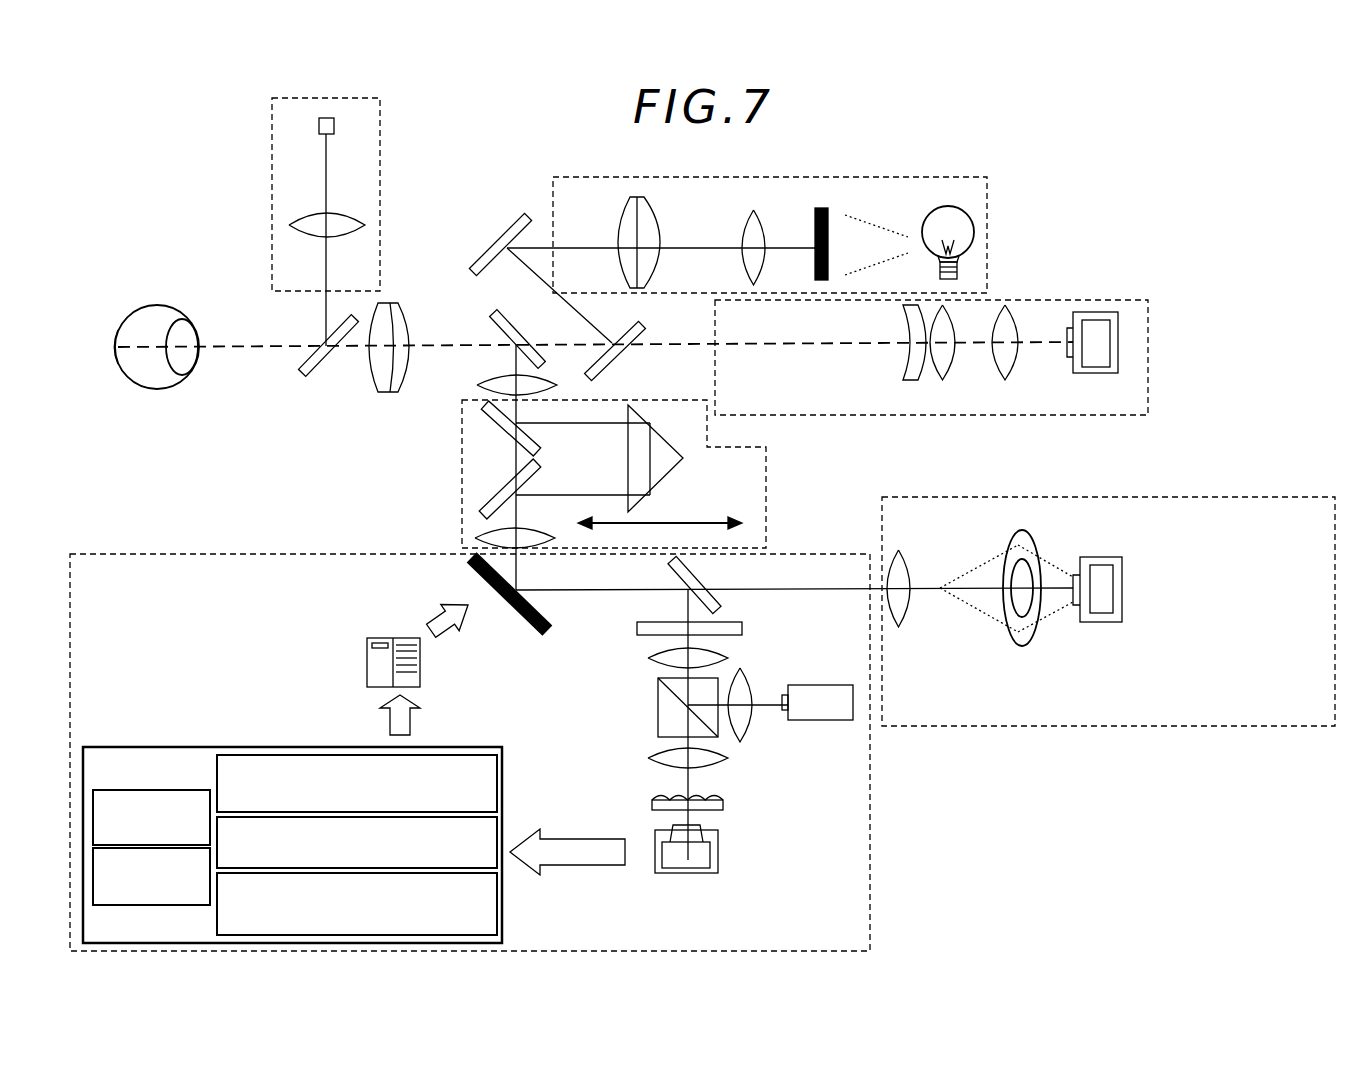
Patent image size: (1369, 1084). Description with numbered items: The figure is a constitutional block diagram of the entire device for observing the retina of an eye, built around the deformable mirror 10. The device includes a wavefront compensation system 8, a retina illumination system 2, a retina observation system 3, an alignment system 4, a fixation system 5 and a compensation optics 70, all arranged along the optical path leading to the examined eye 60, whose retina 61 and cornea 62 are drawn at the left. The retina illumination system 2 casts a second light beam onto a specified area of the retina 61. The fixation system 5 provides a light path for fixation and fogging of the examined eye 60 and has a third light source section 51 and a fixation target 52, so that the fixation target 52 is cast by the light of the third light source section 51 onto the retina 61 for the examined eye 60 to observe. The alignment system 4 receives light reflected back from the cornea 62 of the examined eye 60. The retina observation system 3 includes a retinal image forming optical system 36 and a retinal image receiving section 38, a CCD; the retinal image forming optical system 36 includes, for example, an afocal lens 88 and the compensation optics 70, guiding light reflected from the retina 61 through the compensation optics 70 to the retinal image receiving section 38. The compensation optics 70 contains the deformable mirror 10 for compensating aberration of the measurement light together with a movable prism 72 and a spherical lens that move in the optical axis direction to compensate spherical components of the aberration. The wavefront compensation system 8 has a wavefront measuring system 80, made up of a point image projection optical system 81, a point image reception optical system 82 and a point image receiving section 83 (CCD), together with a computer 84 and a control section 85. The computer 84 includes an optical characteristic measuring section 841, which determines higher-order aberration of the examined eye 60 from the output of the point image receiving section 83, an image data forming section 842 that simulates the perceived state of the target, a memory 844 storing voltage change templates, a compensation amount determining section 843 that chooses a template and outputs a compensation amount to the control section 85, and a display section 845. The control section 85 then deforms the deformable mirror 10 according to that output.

The retina illumination system 2 is at (382, 168).
The fixation system 5 is at (842, 239).
The fixation target 52 is at (833, 210).
The third light source section 51 is at (960, 210).
The examined eye 60 is at (164, 344).
The retina 61 is at (120, 367).
The cornea 62 is at (198, 368).
The afocal lens 88 is at (378, 394).
The alignment system 4 is at (747, 418).
The retina observation system 3 is at (1108, 593).
The retinal image forming optical system 36 is at (948, 542).
The retinal image receiving section 38 is at (1115, 557).
The compensation optics 70 is at (440, 474).
The movable prism 72 is at (680, 468).
The deformable mirror 10 is at (537, 633).
The wavefront compensation system 8 is at (693, 752).
The wavefront measuring system 80 is at (714, 734).
The point image projection optical system 81 is at (770, 657).
The point image reception optical system 82 is at (632, 717).
The point image receiving section 83 is at (720, 865).
The control section 85 is at (377, 638).
The computer 84 is at (330, 819).
The optical characteristic measuring section 841 is at (503, 778).
The image data forming section 842 is at (503, 815).
The compensation amount determining section 843 is at (503, 893).
The memory 844 is at (102, 790).
The display section 845 is at (175, 903).